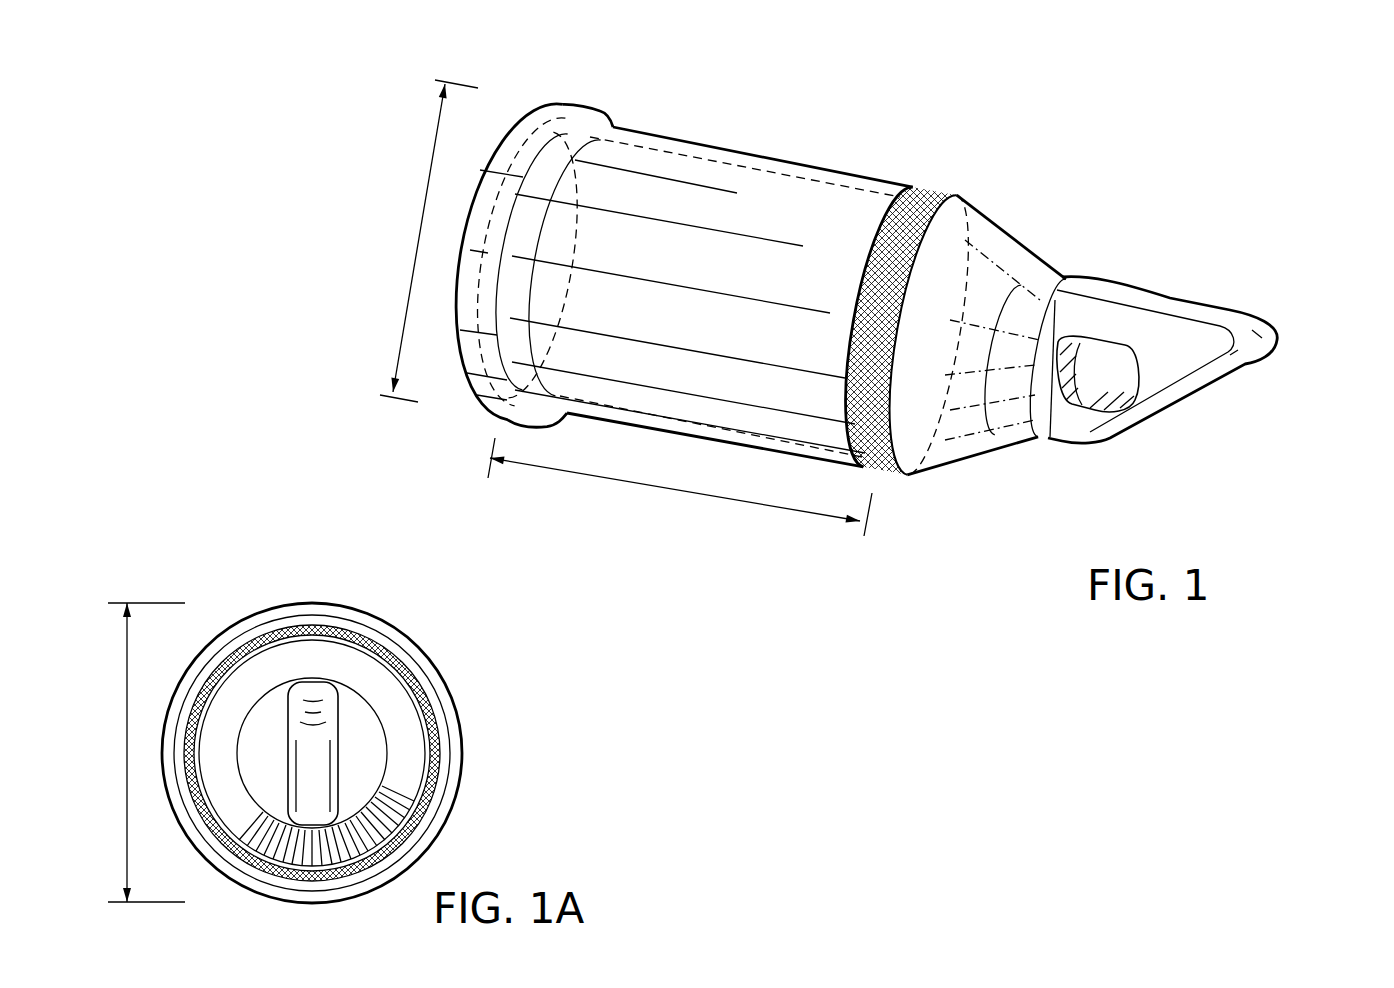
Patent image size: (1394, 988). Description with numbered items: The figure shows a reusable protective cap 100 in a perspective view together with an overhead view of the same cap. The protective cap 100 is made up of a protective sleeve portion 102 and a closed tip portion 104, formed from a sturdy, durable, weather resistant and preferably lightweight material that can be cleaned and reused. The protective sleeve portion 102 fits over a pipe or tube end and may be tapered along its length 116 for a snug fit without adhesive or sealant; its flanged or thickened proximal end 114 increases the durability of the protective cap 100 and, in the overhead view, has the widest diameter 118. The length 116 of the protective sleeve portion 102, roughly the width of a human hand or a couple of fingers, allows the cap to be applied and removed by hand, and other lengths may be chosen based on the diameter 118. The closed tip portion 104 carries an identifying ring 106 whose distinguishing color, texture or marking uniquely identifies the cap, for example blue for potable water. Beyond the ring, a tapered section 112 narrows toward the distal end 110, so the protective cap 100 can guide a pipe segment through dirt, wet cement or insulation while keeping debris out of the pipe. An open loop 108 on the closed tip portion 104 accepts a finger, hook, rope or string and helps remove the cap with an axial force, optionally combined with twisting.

In FIG. 1, the protective cap 100 is at (445, 442).
In FIG. 1, the protective sleeve portion 102 is at (930, 167).
In FIG. 1, the closed tip portion 104 is at (1296, 242).
In FIG. 1, the identifying ring 106 is at (888, 472).
In FIG. 1A, the identifying ring 106 is at (440, 748).
In FIG. 1, the open loop 108 is at (1095, 385).
In FIG. 1, the distal end 110 is at (1255, 327).
In FIG. 1A, the distal end 110 is at (313, 703).
In FIG. 1, the tapered section 112 is at (987, 263).
In FIG. 1A, the tapered section 112 is at (443, 783).
In FIG. 1, the flanged or thickened proximal end 114 is at (557, 107).
In FIG. 1A, the flanged or thickened proximal end 114 is at (285, 612).
In FIG. 1, the length 116 is at (680, 487).
In FIG. 1, the diameter 118 is at (429, 241).
In FIG. 1A, the diameter 118 is at (145, 752).